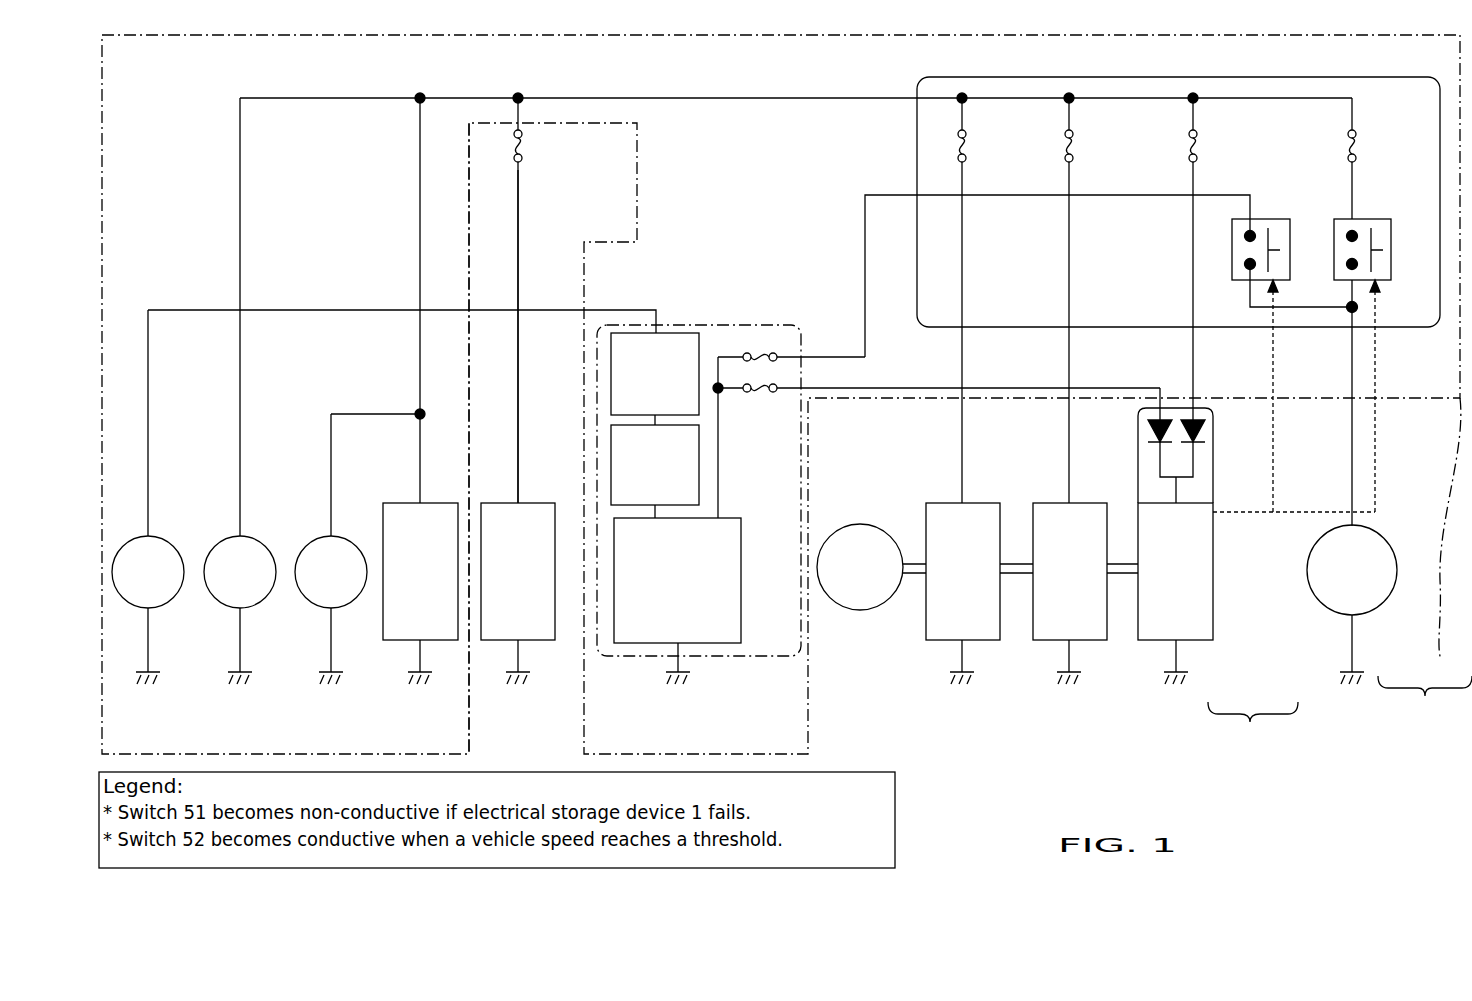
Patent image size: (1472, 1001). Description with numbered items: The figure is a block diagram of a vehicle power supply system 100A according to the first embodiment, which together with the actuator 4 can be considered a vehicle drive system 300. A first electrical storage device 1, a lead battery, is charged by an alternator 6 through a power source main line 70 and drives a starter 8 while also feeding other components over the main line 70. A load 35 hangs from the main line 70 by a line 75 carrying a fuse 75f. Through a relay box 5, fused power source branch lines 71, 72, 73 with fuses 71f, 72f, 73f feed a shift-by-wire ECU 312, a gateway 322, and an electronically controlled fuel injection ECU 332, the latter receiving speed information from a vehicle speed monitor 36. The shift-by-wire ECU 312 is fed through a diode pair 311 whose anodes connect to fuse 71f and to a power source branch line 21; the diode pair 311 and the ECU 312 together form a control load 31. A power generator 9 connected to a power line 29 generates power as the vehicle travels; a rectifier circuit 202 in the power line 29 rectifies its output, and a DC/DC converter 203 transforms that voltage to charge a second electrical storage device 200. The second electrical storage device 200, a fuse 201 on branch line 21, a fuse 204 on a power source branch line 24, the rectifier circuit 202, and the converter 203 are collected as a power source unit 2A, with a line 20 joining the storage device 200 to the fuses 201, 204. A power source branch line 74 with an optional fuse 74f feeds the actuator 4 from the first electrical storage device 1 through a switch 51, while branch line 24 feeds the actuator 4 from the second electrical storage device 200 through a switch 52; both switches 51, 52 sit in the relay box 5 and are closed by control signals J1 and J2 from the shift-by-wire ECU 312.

The first electrical storage device 1 is at (443, 642).
The power source unit 2A is at (756, 657).
The actuator 4 is at (1388, 600).
The relay box 5 is at (1420, 327).
The alternator 6 is at (232, 538).
The starter 8 is at (323, 538).
The power generator 9 is at (140, 538).
The power line 20 is at (720, 490).
The power source branch line 21 is at (893, 387).
The power source branch line 24 is at (890, 197).
The power line 29 is at (548, 310).
The load 31 is at (1219, 579).
The load 35 is at (540, 642).
The vehicle speed monitor 36 is at (863, 612).
The switch 51 is at (1372, 218).
The switch 52 is at (1280, 218).
The power source main line 70 is at (735, 100).
The power source branch line 71 is at (1194, 355).
The power source branch line 72 is at (1070, 355).
The power source branch line 73 is at (963, 355).
The power source branch line 74 is at (1352, 115).
The power line 75 is at (520, 210).
The fuse 71f is at (1199, 150).
The fuse 72f is at (1075, 150).
The fuse 73f is at (968, 150).
The fuse 74f is at (1358, 150).
The fuse 75f is at (523, 152).
The vehicle power supply system 100A is at (786, 394).
The second electrical storage device 200 is at (640, 657).
The fuse 201 is at (760, 395).
The rectifier circuit 202 is at (611, 375).
The DC/DC converter 203 is at (611, 465).
The fuse 204 is at (768, 350).
The vehicle drive system 300 is at (1425, 698).
The diode pair 311 is at (1215, 457).
The shift-by-wire ECU 312 is at (1215, 582).
The gateway 322 is at (1092, 642).
The electronically controlled fuel injection ECU 332 is at (985, 642).
The control signal J1 is at (1387, 396).
The control signal J2 is at (1294, 396).